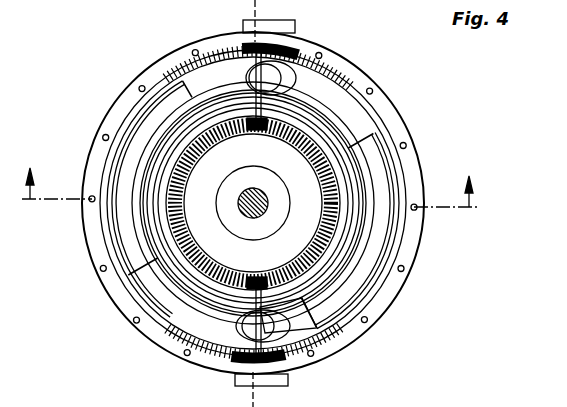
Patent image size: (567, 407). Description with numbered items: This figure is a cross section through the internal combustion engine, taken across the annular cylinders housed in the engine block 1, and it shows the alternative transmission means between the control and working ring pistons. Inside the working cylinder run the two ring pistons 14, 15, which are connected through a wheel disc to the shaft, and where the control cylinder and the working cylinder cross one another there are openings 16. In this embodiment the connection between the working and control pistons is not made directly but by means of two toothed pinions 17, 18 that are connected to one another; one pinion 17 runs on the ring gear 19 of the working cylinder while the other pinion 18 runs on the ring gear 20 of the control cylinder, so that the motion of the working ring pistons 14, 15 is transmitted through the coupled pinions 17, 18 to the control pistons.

The engine block 1 is at (360, 80).
The ring piston 14 is at (143, 143).
The ring piston 15 is at (380, 185).
The openings 16 is at (286, 44).
The toothed pinion 17 is at (250, 292).
The toothed pinion 18 is at (283, 360).
The ring gear of the working cylinder 19 is at (243, 280).
The ring gear of the control cylinder 20 is at (295, 362).